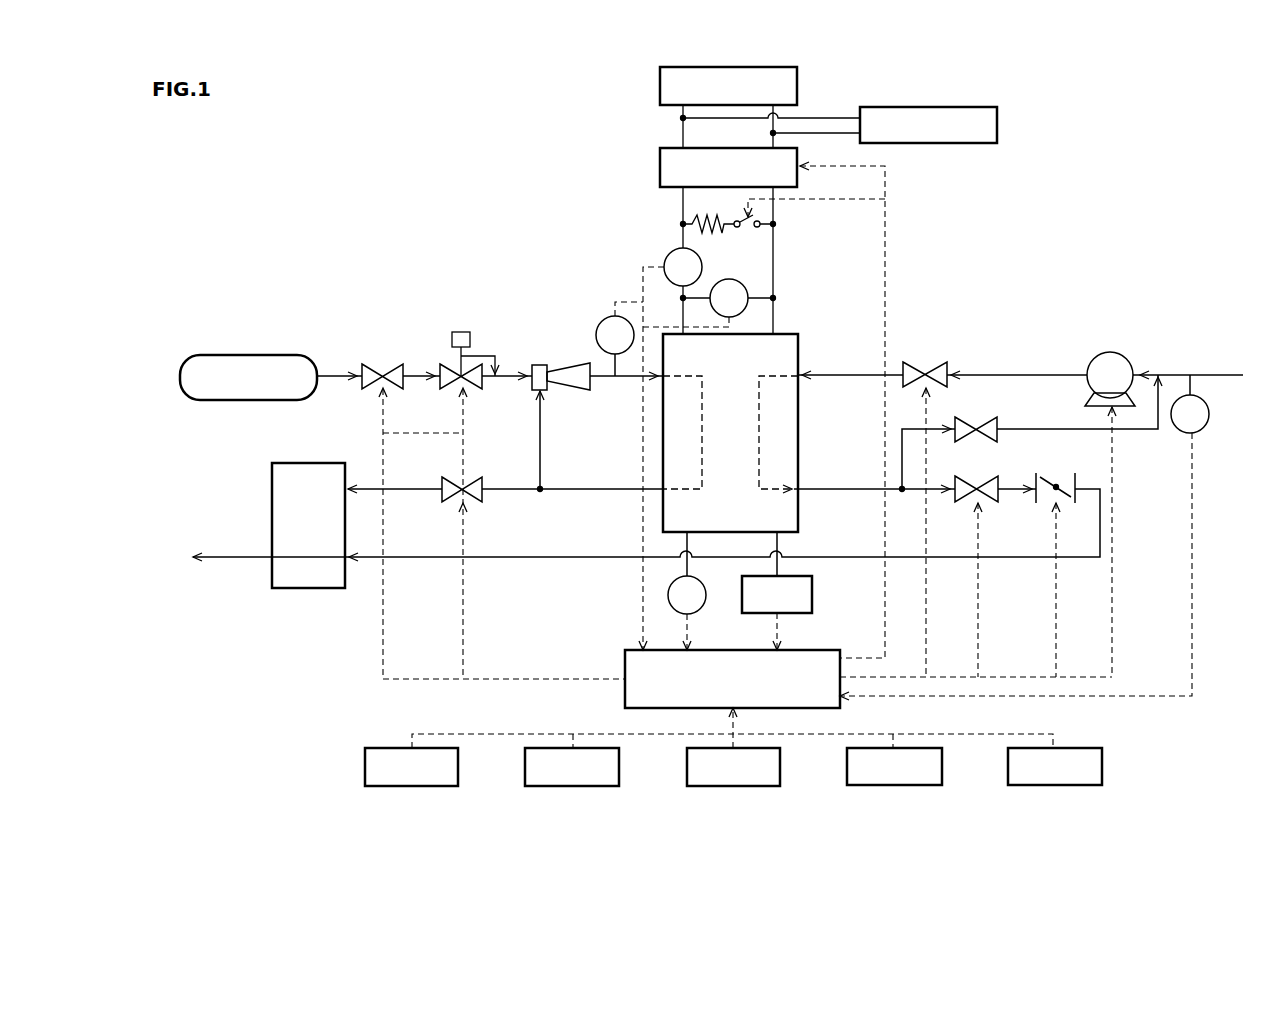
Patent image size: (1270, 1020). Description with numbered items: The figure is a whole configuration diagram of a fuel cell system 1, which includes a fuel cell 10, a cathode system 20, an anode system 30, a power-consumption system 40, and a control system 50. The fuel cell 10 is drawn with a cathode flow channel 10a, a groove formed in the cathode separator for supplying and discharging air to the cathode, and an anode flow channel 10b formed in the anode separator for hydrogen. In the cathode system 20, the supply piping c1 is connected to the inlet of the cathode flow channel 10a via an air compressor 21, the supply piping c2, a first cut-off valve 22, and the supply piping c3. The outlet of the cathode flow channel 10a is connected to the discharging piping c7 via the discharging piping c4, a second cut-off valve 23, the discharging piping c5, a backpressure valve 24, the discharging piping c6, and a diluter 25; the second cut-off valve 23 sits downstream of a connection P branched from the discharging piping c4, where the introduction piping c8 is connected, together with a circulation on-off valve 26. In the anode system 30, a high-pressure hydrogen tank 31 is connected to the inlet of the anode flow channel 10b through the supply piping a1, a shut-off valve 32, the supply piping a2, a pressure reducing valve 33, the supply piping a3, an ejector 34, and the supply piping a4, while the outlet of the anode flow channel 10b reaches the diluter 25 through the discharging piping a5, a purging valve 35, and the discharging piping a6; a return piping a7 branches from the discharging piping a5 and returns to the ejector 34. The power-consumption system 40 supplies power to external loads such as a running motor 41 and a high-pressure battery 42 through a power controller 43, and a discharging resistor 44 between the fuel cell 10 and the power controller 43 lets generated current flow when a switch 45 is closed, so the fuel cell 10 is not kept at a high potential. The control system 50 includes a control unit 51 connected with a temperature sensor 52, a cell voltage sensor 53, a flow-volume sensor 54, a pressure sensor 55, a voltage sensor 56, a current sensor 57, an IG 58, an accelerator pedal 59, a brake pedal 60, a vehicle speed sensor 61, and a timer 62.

The fuel cell system 1 is at (346, 153).
The fuel cell 10 is at (755, 428).
The cathode flow channel 10a is at (754, 378).
The anode flow channel 10b is at (704, 378).
The cathode system 20 is at (908, 305).
The air compressor 21 is at (1110, 352).
The first cut-off valve 22 is at (930, 362).
The second cut-off valve 23 is at (976, 482).
The backpressure valve 24 is at (1079, 502).
The diluter 25 is at (272, 488).
The circulation on-off valve 26 is at (965, 422).
The anode system 30 is at (373, 298).
The high-pressure hydrogen tank 31 is at (246, 355).
The shut-off valve 32 is at (388, 369).
The pressure reducing valve 33 is at (462, 330).
The ejector 34 is at (571, 363).
The purging valve 35 is at (465, 484).
The power-consumption system 40 is at (601, 107).
The running motor 41 is at (660, 90).
The high-pressure battery 42 is at (999, 129).
The power controller 43 is at (660, 172).
The discharging resistor 44 is at (692, 222).
The switch 45 is at (768, 232).
The control system 50 is at (580, 712).
The control unit 51 is at (804, 646).
The temperature sensor 52 is at (707, 598).
The cell voltage sensor 53 is at (812, 598).
The flow-volume sensor 54 is at (1206, 430).
The pressure sensor 55 is at (604, 320).
The voltage sensor 56 is at (733, 281).
The current sensor 57 is at (668, 258).
The IG 58 is at (1102, 772).
The accelerator pedal 59 is at (942, 772).
The brake pedal 60 is at (780, 772).
The vehicle speed sensor 61 is at (619, 772).
The timer 62 is at (458, 772).
The supply piping a1 is at (336, 379).
The supply piping a2 is at (414, 379).
The supply piping a3 is at (501, 379).
The supply piping a4 is at (607, 379).
The discharging piping a5 is at (601, 492).
The discharging piping a6 is at (405, 492).
The return piping a7 is at (545, 440).
The supply piping c1 is at (1226, 378).
The supply piping c2 is at (1020, 373).
The supply piping c3 is at (838, 378).
The discharging piping c4 is at (835, 492).
The discharging piping c5 is at (1010, 492).
The discharging piping c6 is at (1016, 560).
The discharging piping c7 is at (233, 560).
The introduction piping c8 is at (1138, 432).
The connection P is at (900, 494).